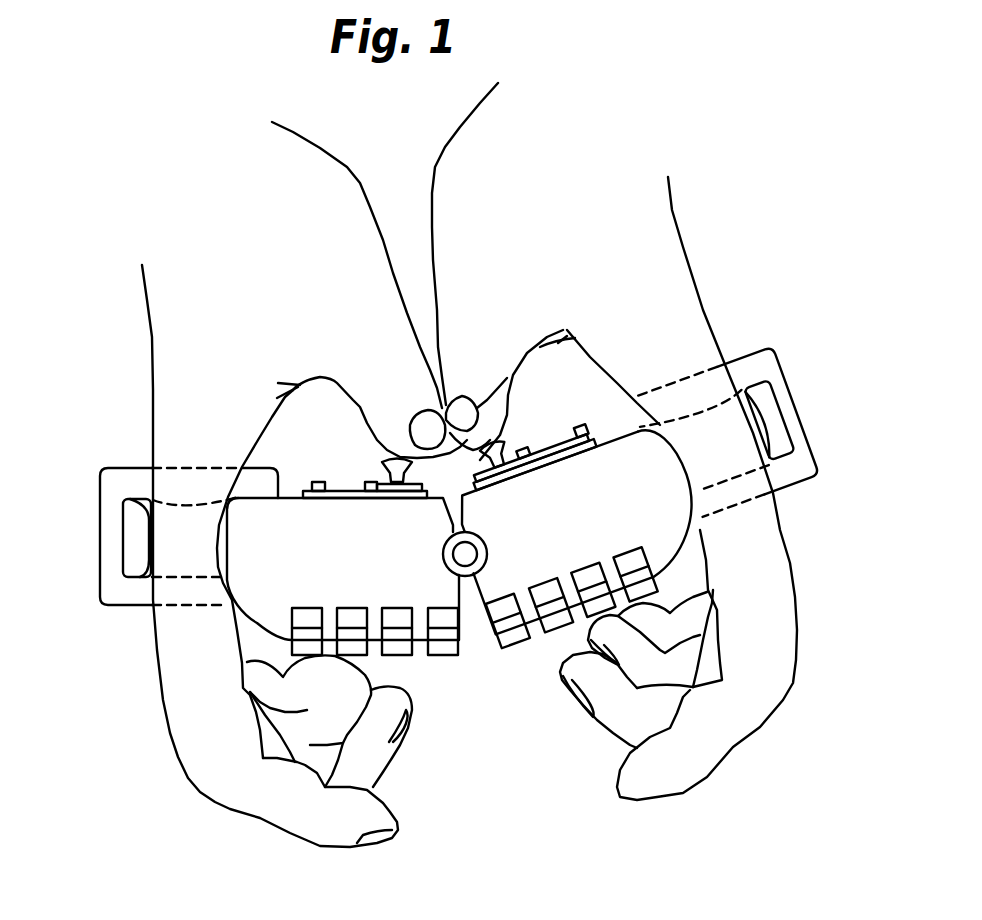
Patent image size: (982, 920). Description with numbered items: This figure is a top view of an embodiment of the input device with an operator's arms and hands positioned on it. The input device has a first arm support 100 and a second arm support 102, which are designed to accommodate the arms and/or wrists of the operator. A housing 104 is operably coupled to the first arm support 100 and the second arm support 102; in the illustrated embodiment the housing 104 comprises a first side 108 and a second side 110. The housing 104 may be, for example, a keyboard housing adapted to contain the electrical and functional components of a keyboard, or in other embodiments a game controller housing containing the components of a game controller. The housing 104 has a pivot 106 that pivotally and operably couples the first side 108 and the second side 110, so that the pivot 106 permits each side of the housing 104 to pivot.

The first arm support 100 is at (722, 470).
The second arm support 102 is at (192, 558).
The housing 104 is at (477, 694).
The pivot 106 is at (443, 557).
The first side 108 is at (277, 592).
The second side 110 is at (663, 537).